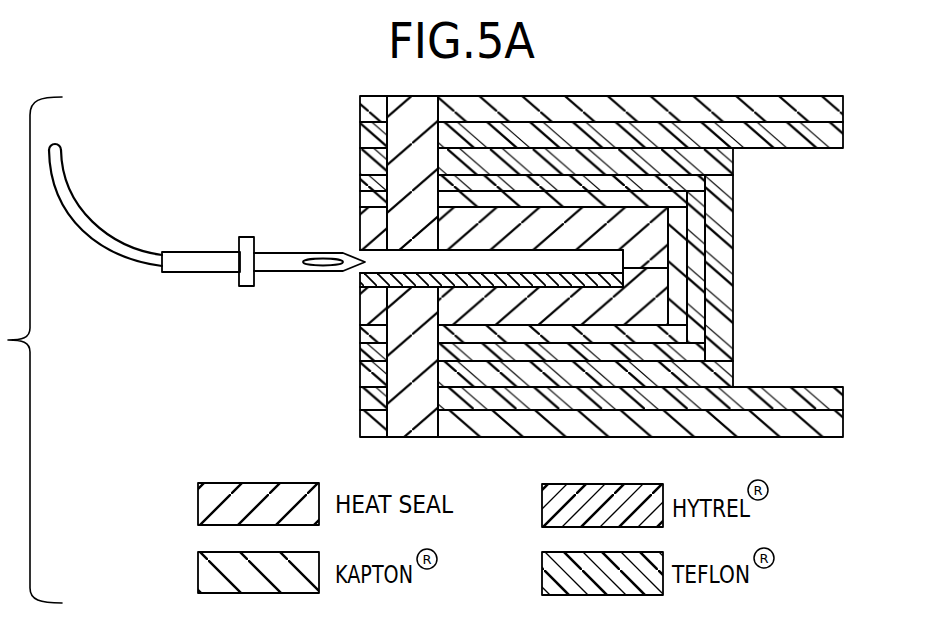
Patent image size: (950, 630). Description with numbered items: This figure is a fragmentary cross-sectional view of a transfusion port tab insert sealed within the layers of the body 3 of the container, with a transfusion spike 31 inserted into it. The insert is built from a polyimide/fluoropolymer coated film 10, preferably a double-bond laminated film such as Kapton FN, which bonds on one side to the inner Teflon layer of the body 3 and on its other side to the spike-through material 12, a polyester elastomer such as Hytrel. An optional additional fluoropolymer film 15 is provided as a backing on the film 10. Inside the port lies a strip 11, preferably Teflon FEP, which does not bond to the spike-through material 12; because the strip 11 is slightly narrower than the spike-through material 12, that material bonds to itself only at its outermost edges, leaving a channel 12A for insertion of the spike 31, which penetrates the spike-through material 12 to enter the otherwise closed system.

The body of the container 3 is at (790, 440).
The polyimide/fluoropolymer coated film 10 is at (677, 308).
The strip 11 is at (360, 277).
The spike-through material 12 is at (700, 224).
The channel 12A is at (360, 250).
The fluoropolymer film 15 is at (733, 178).
The spike 31 is at (222, 272).